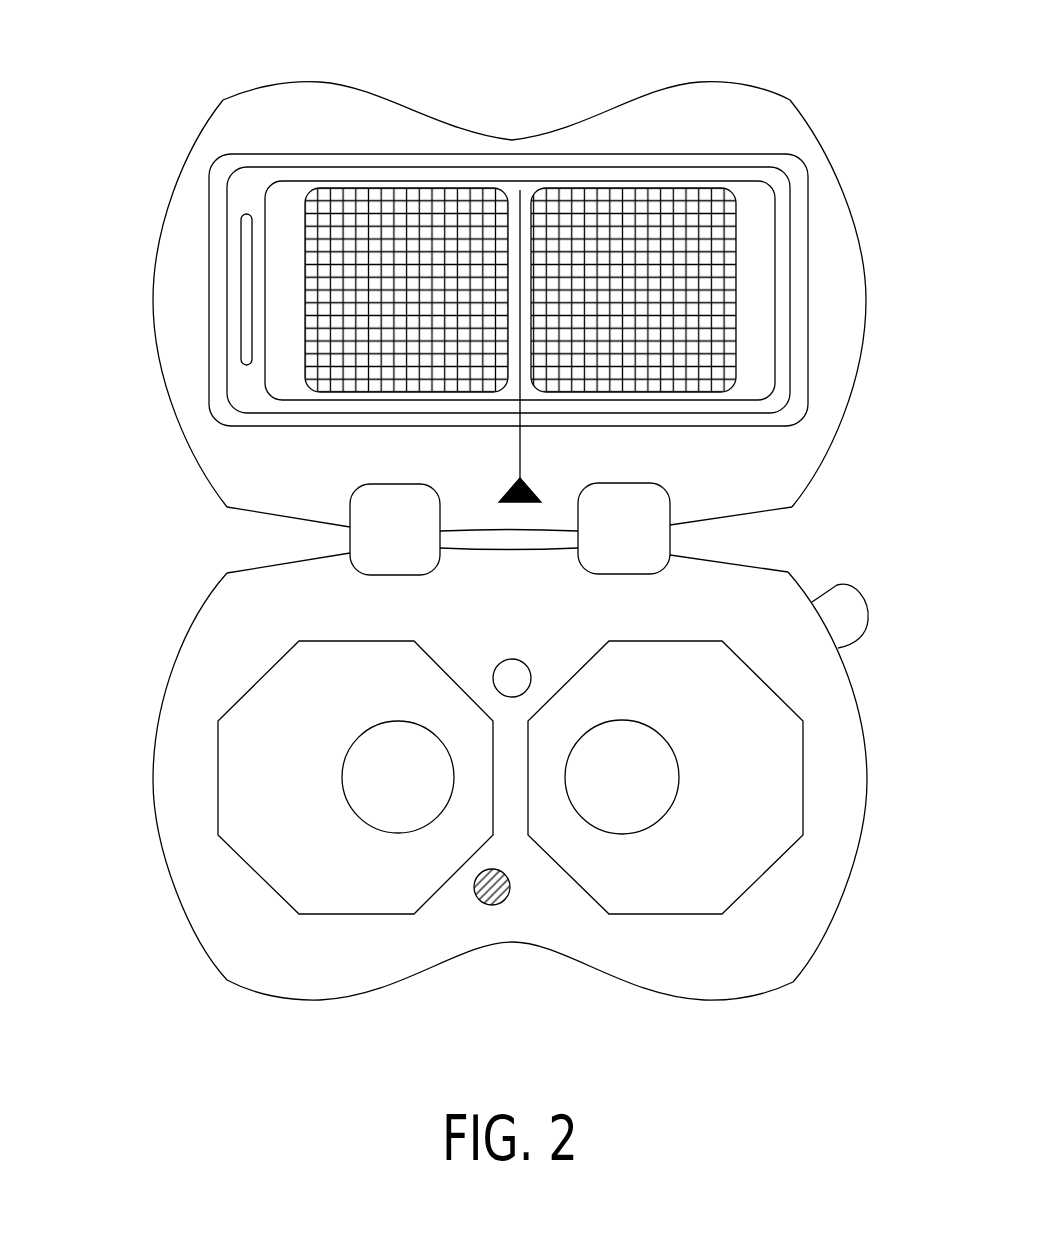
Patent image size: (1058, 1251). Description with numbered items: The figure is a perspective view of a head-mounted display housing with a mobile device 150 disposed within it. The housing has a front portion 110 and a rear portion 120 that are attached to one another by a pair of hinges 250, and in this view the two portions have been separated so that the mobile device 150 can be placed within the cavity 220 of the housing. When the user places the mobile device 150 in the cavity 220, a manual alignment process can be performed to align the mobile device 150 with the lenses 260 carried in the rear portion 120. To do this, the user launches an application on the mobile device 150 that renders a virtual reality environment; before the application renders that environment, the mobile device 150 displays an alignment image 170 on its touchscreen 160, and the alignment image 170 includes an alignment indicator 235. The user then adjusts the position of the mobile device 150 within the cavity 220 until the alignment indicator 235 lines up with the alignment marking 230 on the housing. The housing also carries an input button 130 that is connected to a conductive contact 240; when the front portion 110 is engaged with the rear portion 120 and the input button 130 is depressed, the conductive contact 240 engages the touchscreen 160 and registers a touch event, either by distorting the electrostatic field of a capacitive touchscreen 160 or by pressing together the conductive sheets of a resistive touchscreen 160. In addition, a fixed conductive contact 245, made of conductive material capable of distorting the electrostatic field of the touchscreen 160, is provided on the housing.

The front portion 110 is at (868, 303).
The rear portion 120 is at (869, 790).
The input button 130 is at (872, 613).
The mobile device 150 is at (792, 287).
The touchscreen 160 is at (523, 185).
The alignment image 170 is at (755, 353).
The cavity 220 is at (208, 290).
The alignment marking 230 is at (521, 450).
The alignment indicator 235 is at (507, 188).
The conductive contact 240 is at (503, 659).
The fixed conductive contact 245 is at (510, 887).
The hinges 250 is at (350, 537).
The lenses 260 is at (343, 775).